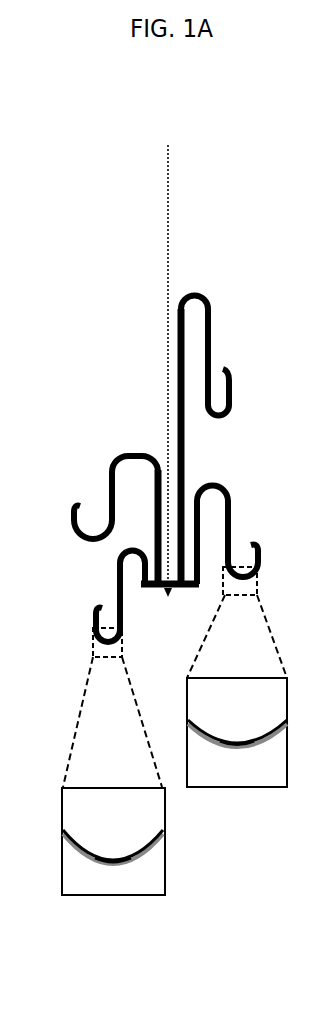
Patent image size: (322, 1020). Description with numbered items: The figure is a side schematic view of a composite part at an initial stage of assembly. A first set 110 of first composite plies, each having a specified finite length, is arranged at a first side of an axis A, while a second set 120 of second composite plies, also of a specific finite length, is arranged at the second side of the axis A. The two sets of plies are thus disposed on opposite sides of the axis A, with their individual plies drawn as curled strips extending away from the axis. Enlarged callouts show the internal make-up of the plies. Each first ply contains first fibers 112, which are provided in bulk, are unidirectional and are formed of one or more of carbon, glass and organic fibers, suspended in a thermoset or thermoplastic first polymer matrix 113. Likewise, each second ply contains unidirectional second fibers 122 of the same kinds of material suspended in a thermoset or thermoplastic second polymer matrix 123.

The axis A is at (167, 175).
The first set of first composite plies 110 is at (236, 445).
The first fibers 112 is at (270, 735).
The first polymer matrix 113 is at (235, 742).
The second set of second composite plies 120 is at (162, 445).
The second fibers 122 is at (100, 860).
The second polymer matrix 123 is at (147, 855).